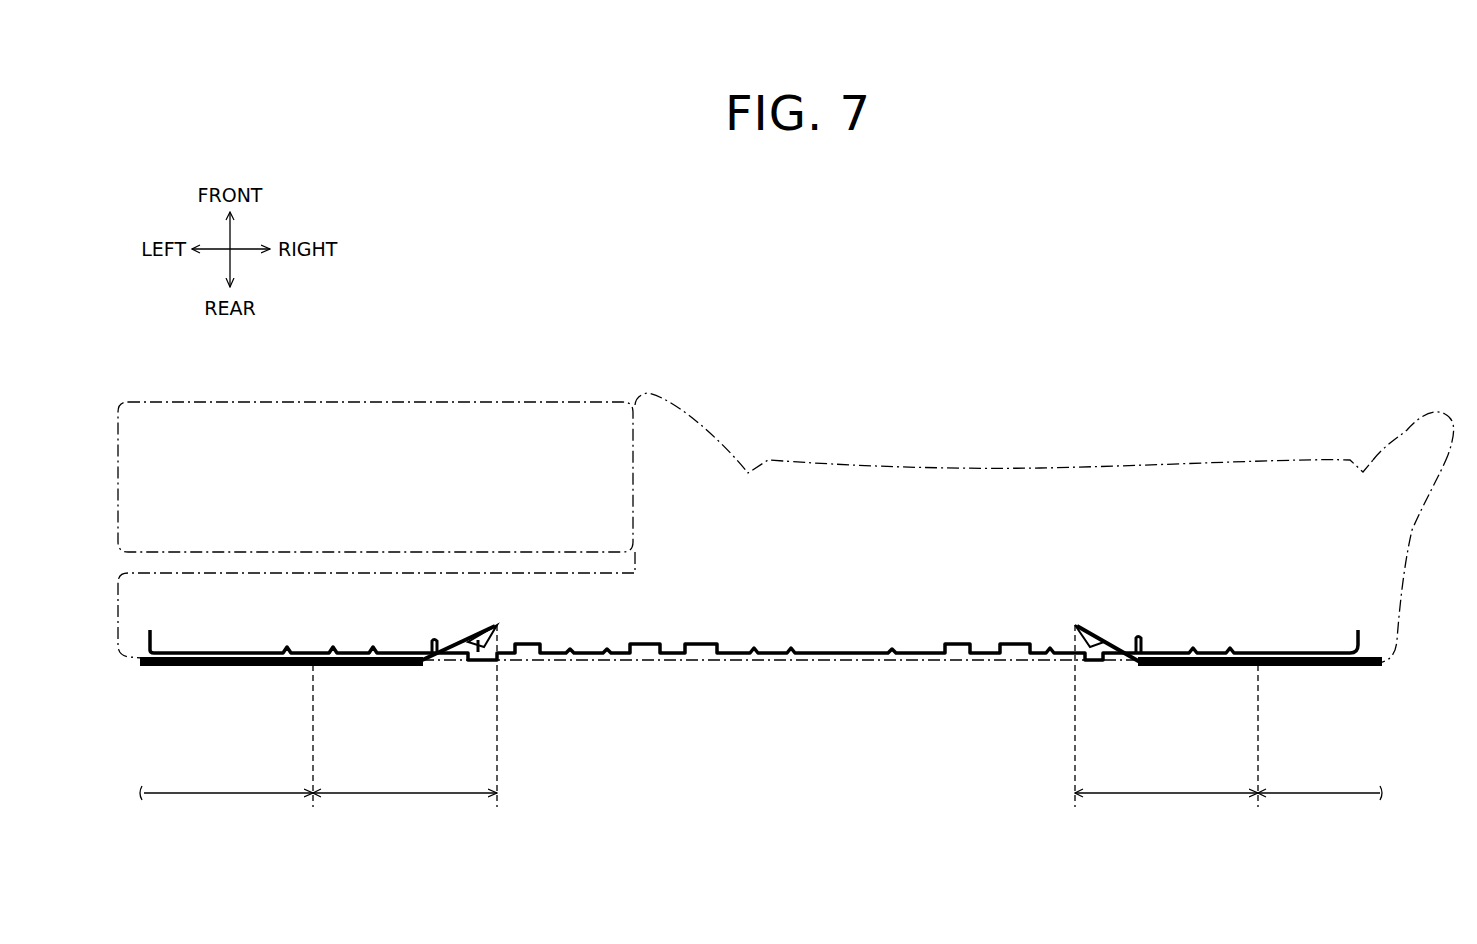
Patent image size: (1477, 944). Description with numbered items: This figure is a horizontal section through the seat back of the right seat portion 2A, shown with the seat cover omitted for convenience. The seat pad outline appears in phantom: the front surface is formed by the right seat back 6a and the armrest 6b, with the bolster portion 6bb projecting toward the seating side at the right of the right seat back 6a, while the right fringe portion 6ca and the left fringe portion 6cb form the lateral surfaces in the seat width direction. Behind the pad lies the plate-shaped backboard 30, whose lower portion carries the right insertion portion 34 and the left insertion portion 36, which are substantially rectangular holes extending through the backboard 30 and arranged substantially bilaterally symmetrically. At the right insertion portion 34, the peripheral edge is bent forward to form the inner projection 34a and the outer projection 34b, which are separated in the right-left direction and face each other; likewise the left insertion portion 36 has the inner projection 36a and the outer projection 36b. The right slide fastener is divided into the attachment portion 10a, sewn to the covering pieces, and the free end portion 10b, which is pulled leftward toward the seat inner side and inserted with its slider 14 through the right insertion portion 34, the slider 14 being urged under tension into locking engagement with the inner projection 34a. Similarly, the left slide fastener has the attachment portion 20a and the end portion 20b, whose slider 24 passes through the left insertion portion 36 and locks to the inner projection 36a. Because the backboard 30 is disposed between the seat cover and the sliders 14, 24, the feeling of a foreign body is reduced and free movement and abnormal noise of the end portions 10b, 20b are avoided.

The right seat portion 2A is at (1242, 292).
The right seat back 6a is at (1040, 490).
The armrest 6b is at (388, 422).
The bolster portion 6bb is at (1407, 425).
The right fringe portion 6ca is at (1409, 550).
The left fringe portion 6cb is at (118, 632).
The backboard 30 is at (735, 665).
The slider 24 is at (492, 652).
The slider 14 is at (1087, 645).
The left insertion portion 36 is at (438, 630).
The inner projection 36a is at (465, 634).
The outer projection 36b is at (428, 641).
The right insertion portion 34 is at (1138, 630).
The inner projection 34a is at (1120, 640).
The outer projection 34b is at (1142, 643).
The attachment portion 20a is at (226, 736).
The end portion 20b is at (405, 716).
The attachment portion 10a is at (1320, 784).
The end portion 10b is at (1166, 716).